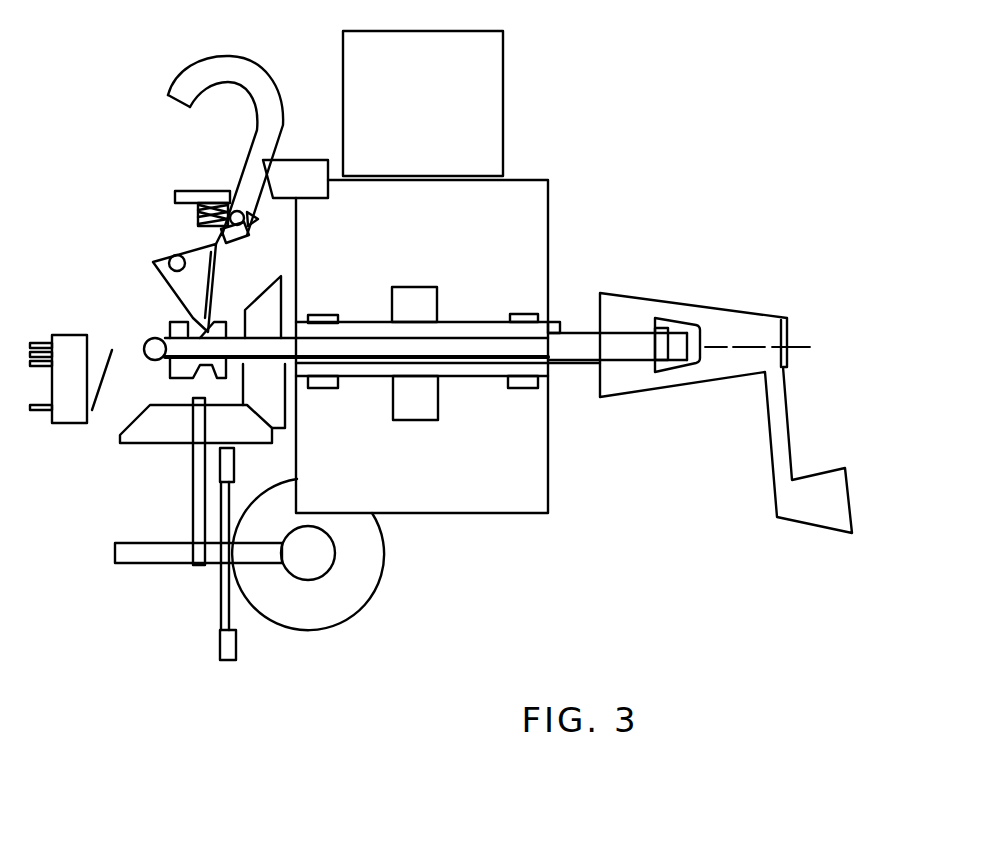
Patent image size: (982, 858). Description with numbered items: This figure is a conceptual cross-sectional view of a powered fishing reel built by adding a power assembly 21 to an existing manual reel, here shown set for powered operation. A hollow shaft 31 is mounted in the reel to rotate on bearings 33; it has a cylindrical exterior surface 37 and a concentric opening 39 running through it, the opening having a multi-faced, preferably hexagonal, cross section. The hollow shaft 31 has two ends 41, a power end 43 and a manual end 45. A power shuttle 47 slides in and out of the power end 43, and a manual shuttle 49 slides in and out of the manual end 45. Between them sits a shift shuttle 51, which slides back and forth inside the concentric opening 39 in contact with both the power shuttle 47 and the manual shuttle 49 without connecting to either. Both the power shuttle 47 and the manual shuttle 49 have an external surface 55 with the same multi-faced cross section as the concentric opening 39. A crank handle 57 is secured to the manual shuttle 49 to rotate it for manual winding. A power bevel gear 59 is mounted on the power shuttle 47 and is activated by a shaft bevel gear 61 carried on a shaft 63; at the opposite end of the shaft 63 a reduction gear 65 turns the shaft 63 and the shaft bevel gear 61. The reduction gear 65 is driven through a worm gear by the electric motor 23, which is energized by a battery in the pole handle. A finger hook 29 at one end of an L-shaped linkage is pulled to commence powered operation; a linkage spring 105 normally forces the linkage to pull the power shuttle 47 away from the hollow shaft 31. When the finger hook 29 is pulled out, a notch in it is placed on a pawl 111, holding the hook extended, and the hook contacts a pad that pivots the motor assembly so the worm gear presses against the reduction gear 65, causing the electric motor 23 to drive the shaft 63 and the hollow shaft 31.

The power assembly 21 is at (130, 319).
The electric motor 23 is at (357, 585).
The finger hook 29 is at (204, 73).
The hollow shaft 31 is at (525, 333).
The bearings 33 is at (314, 320).
The exterior surface 37 is at (487, 321).
The concentric opening 39 is at (443, 332).
The ends 41 is at (288, 328).
The power end 43 is at (300, 378).
The manual end 45 is at (553, 330).
The power shuttle 47 is at (320, 366).
The manual shuttle 49 is at (630, 345).
The shift shuttle 51 is at (448, 352).
The external surface 55 is at (552, 363).
The crank handle 57 is at (780, 444).
The power bevel gear 59 is at (262, 387).
The shaft bevel gear 61 is at (146, 433).
The shaft 63 is at (200, 480).
The reduction gear 65 is at (148, 555).
The linkage spring 105 is at (222, 216).
The pawl 111 is at (290, 168).